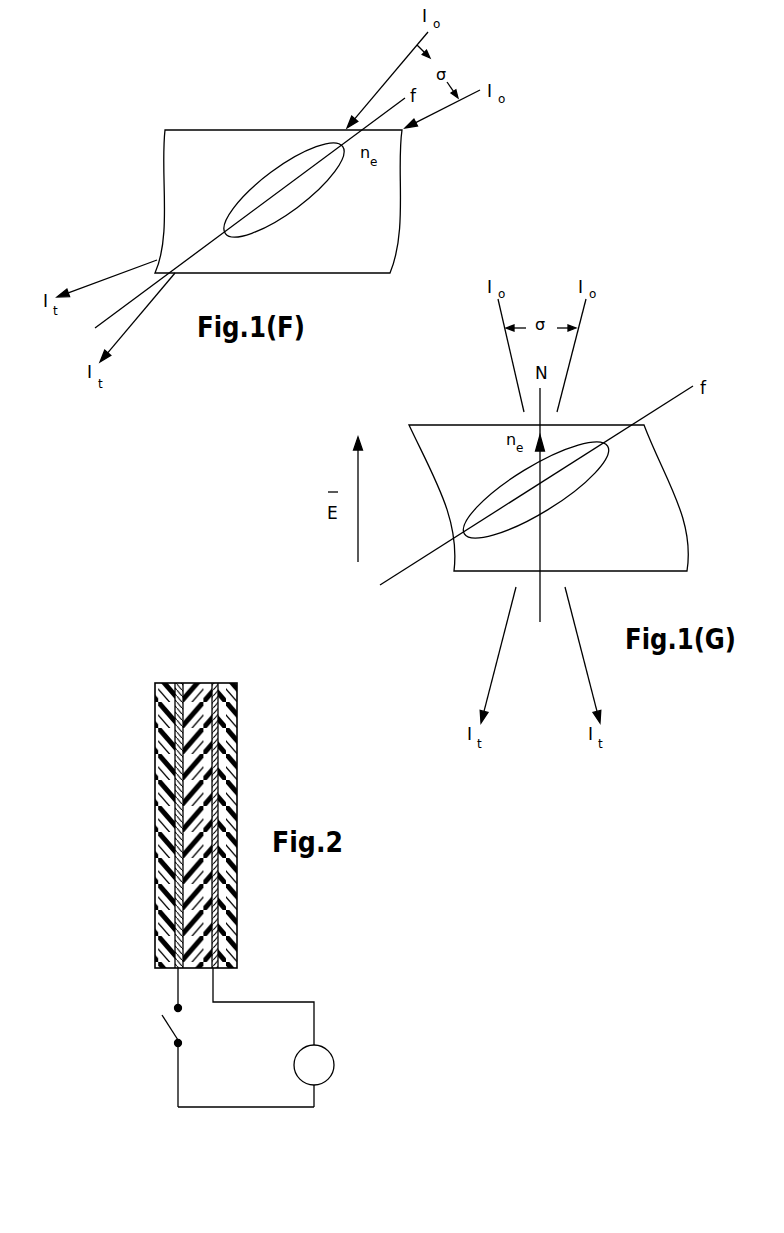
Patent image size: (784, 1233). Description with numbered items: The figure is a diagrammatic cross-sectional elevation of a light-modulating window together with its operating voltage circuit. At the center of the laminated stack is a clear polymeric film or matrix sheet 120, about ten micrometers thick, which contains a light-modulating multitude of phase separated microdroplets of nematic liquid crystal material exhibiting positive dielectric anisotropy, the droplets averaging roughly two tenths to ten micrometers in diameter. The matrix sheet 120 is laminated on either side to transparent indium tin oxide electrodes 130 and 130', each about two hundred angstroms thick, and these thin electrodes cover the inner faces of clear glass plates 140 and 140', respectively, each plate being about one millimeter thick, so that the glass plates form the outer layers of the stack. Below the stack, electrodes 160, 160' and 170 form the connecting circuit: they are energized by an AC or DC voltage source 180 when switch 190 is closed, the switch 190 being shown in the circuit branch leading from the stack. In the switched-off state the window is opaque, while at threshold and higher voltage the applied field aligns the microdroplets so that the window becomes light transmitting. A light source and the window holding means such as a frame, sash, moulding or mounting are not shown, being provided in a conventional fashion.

The matrix sheet 120 is at (198, 687).
The transparent indium tin oxide electrode 130 is at (163, 783).
The transparent indium tin oxide electrode 130' is at (256, 794).
The glass plate 140 is at (132, 797).
The glass plate 140' is at (272, 819).
The electrode 160 is at (137, 990).
The electrode 160' is at (246, 1130).
The electrode 170 is at (257, 1002).
The voltage source 180 is at (334, 1065).
The switch 190 is at (165, 1027).